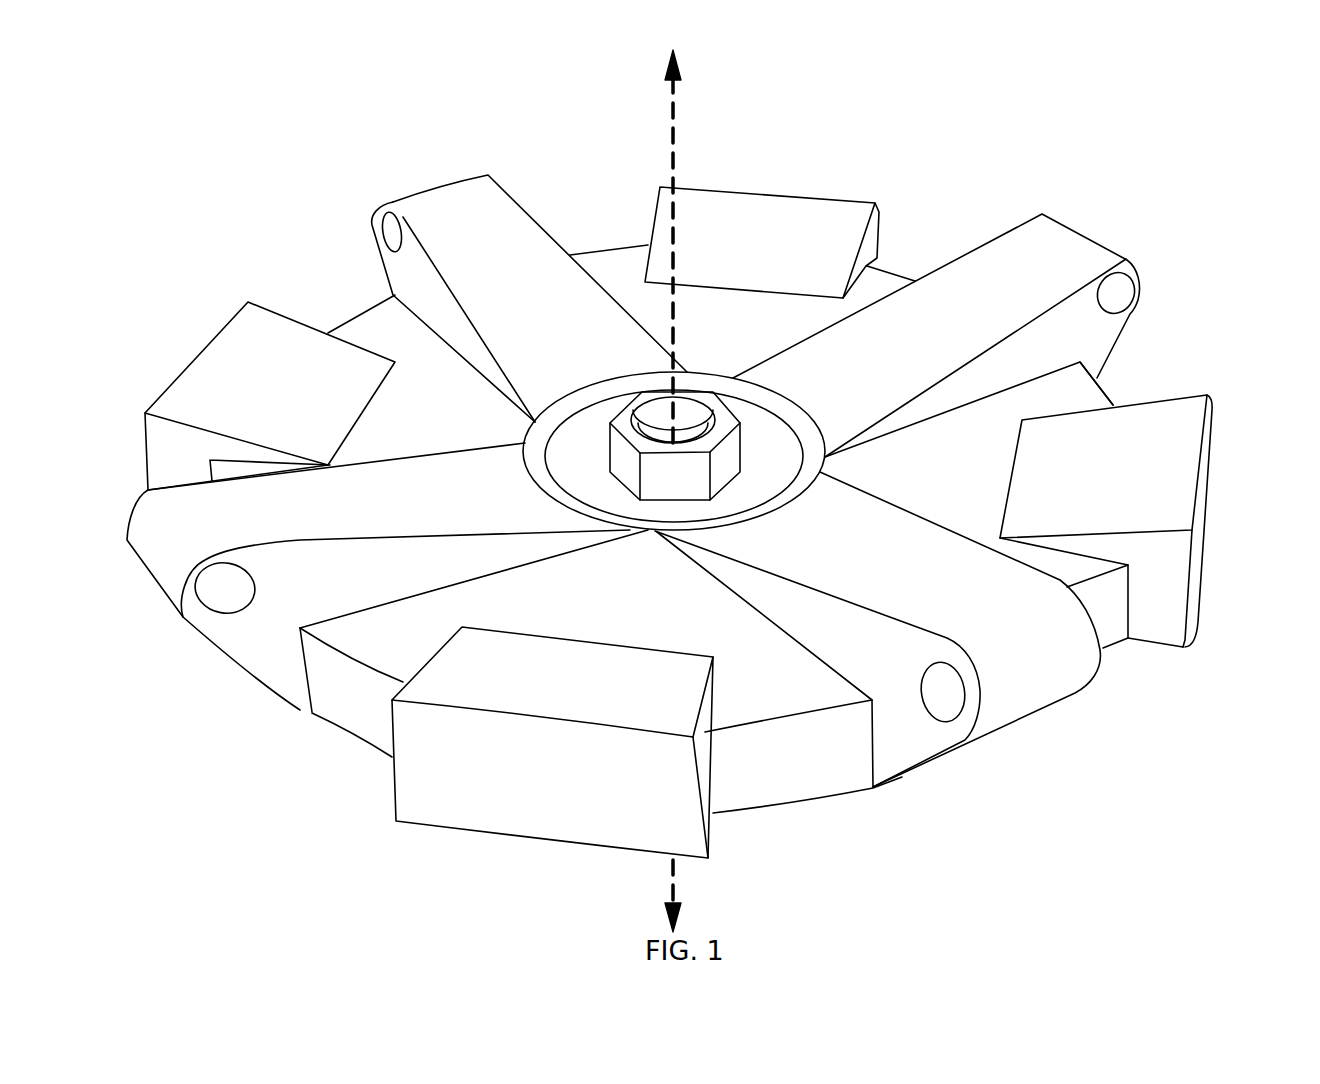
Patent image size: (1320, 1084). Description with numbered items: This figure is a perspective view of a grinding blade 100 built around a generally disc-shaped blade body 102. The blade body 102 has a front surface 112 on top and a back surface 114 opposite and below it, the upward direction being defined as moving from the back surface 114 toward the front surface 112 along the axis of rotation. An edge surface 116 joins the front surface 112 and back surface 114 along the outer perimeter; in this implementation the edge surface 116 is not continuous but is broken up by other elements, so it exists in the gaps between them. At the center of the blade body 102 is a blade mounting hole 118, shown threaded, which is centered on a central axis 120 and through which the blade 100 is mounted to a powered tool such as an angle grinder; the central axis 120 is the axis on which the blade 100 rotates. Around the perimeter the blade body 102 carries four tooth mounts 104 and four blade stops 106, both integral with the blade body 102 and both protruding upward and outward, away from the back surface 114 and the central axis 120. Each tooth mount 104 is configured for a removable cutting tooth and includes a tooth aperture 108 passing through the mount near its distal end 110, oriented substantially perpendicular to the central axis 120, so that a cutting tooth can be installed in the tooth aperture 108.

The grinding blade 100 is at (1185, 157).
The blade body 102 is at (370, 327).
The tooth mount 104 is at (1058, 660).
The blade stop 106 is at (1170, 458).
The tooth aperture 108 is at (220, 600).
The distal end 110 is at (975, 700).
The front surface 112 is at (610, 268).
The back surface 114 is at (808, 835).
The edge surface 116 is at (340, 713).
The blade mounting hole 118 is at (707, 408).
The central axis 120 is at (672, 140).